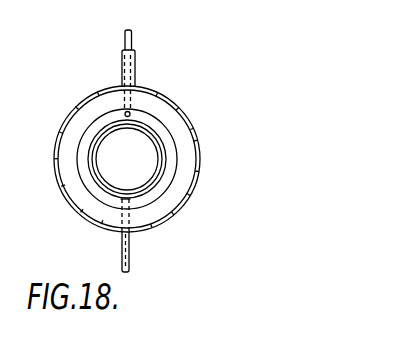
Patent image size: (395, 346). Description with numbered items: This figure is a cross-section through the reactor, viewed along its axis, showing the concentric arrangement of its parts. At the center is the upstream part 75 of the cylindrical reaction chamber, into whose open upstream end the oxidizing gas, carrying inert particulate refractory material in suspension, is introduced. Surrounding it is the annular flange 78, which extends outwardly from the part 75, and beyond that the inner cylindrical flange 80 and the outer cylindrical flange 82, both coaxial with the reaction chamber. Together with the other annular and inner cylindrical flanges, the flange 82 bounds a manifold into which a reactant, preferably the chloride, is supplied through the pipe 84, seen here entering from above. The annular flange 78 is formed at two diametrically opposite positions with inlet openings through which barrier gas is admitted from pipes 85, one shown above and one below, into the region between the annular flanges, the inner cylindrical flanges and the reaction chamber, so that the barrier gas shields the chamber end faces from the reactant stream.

The upstream part of reaction chamber 75 is at (92, 146).
The annular flange 78 is at (81, 118).
The inner cylindrical flange 80 is at (76, 163).
The outer cylindrical flange 82 is at (97, 94).
The pipe 84 is at (122, 78).
The barrier gas pipe 85 is at (125, 41).